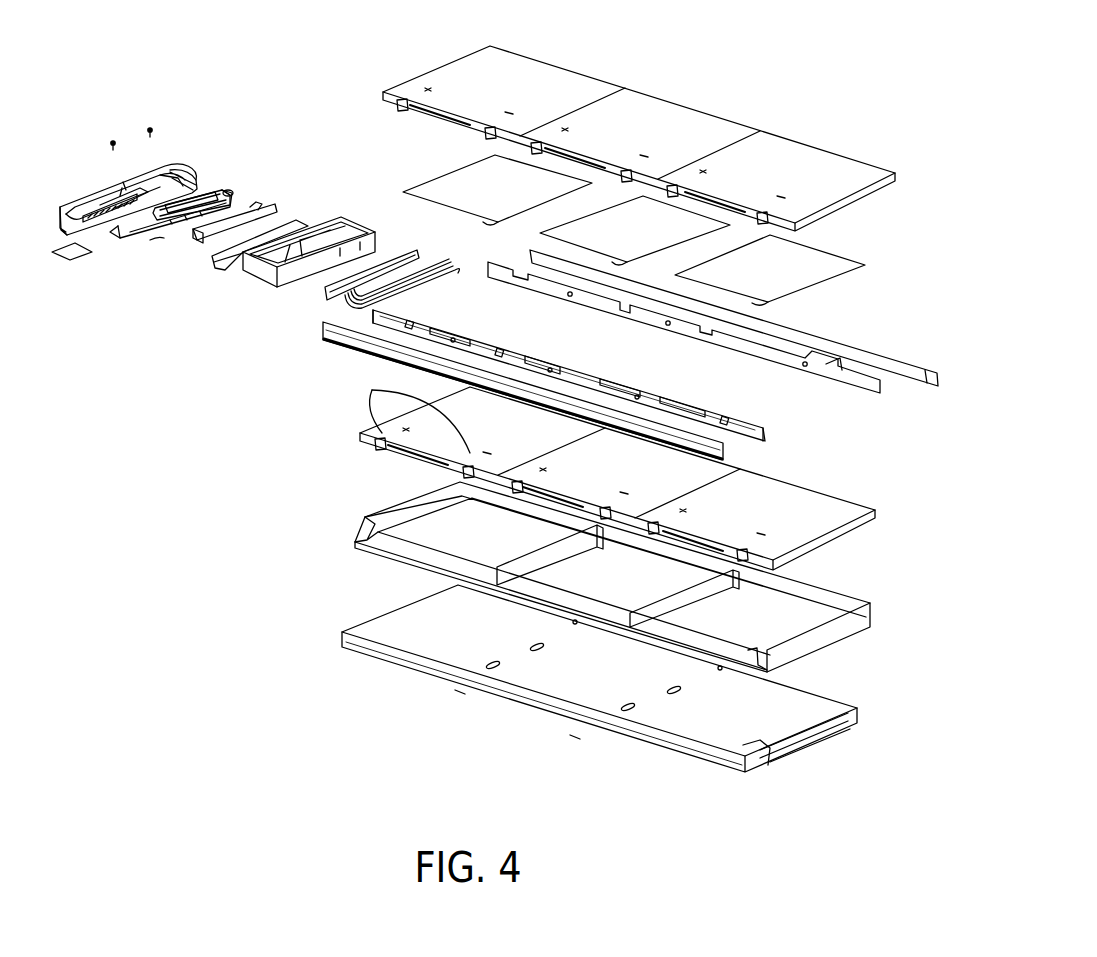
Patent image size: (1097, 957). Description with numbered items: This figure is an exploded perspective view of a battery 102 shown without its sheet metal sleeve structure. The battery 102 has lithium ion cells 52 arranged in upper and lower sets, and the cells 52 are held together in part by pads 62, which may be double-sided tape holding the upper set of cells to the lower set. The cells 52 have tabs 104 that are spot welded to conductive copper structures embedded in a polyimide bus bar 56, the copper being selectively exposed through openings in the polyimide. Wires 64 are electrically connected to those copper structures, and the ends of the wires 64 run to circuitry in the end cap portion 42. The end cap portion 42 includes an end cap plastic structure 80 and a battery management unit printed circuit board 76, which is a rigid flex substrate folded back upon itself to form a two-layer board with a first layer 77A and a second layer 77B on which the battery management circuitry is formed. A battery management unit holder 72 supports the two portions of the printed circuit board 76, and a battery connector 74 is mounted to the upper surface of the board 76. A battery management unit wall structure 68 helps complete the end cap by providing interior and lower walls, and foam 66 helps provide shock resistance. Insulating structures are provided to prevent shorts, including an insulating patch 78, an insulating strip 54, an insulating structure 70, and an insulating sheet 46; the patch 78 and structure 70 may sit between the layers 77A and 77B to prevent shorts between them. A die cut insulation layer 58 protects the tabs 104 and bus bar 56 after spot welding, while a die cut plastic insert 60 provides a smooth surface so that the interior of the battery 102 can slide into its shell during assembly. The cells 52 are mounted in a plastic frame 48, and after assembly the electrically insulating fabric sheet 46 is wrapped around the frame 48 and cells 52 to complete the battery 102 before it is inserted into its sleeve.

The battery 102 is at (766, 42).
The end cap portion 42 is at (337, 97).
The insulating sheet 46 is at (725, 757).
The frame 48 is at (853, 628).
The lithium ion cells 52 is at (878, 194).
The insulating strip 54 is at (722, 447).
The bus bar 56 is at (768, 430).
The die cut insulation layer 58 is at (863, 385).
The die cut plastic insert 60 is at (927, 380).
The pads 62 is at (452, 180).
The wires 64 is at (428, 296).
The foam 66 is at (327, 295).
The battery management unit wall structure 68 is at (275, 285).
The insulating structure 70 is at (213, 268).
The battery management unit holder 72 is at (262, 205).
The battery connector 74 is at (200, 187).
The battery management unit printed circuit board 76 is at (148, 247).
The first layer 77A is at (160, 237).
The second layer 77B is at (230, 190).
The insulating patch 78 is at (68, 257).
The end cap plastic structure 80 is at (92, 204).
The tabs 104 is at (372, 390).